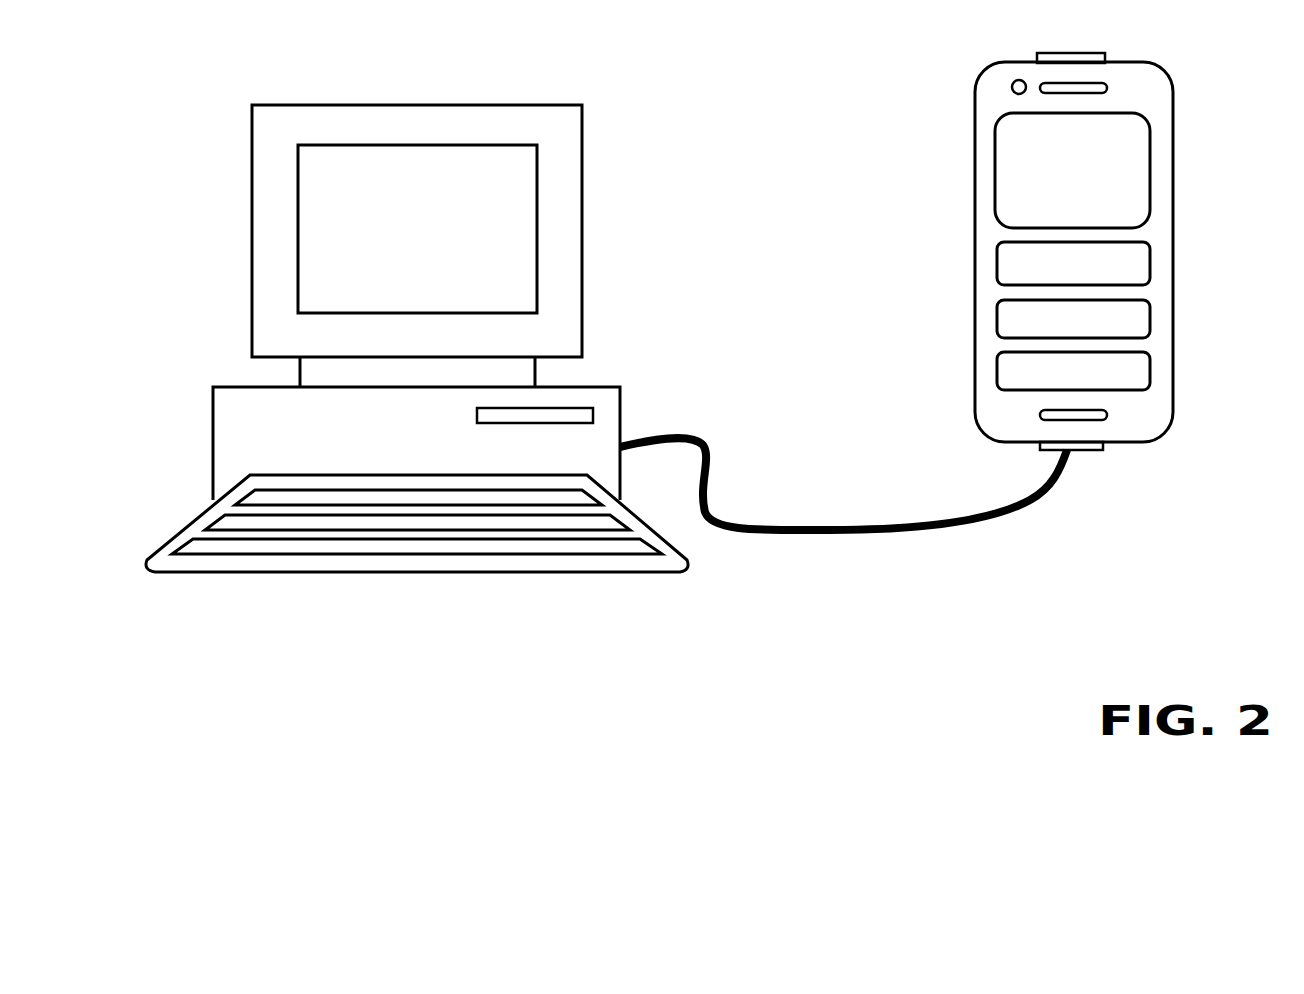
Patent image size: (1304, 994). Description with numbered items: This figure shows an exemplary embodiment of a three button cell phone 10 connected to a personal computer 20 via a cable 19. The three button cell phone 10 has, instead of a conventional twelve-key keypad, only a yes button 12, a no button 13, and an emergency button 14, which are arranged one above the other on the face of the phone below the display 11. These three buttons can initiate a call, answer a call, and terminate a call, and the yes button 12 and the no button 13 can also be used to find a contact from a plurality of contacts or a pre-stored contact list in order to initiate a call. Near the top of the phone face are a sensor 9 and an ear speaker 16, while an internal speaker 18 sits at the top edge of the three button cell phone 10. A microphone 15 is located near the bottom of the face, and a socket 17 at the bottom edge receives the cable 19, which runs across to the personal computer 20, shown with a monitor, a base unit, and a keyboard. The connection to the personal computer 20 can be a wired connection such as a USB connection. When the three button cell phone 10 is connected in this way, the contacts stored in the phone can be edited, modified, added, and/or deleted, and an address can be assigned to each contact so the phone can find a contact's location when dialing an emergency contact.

The sensor 9 is at (1012, 87).
The three button cell phone 10 is at (975, 205).
The display 11 is at (1150, 168).
The yes button 12 is at (1150, 262).
The no button 13 is at (1150, 318).
The emergency button 14 is at (1150, 370).
The microphone 15 is at (1107, 415).
The ear speaker 16 is at (1105, 88).
The socket 17 is at (1103, 448).
The internal speaker 18 is at (1037, 55).
The cable 19 is at (883, 530).
The personal computer 20 is at (618, 405).